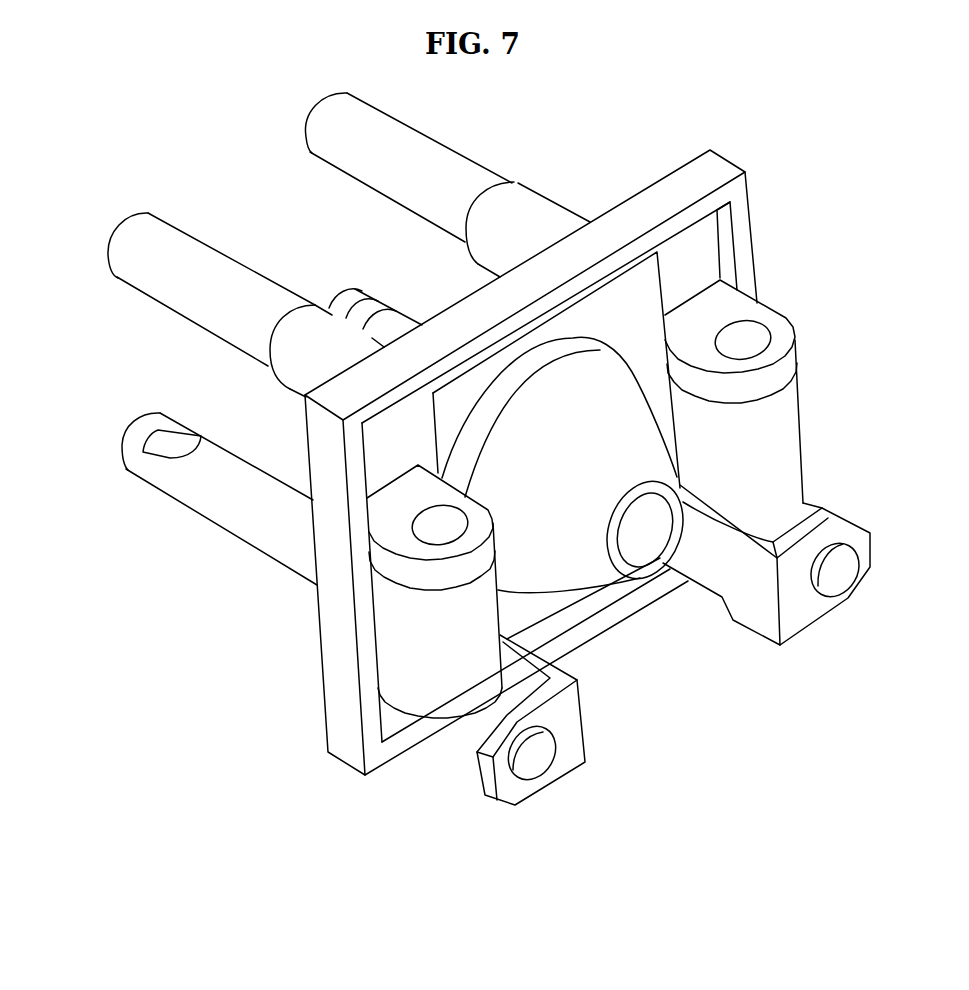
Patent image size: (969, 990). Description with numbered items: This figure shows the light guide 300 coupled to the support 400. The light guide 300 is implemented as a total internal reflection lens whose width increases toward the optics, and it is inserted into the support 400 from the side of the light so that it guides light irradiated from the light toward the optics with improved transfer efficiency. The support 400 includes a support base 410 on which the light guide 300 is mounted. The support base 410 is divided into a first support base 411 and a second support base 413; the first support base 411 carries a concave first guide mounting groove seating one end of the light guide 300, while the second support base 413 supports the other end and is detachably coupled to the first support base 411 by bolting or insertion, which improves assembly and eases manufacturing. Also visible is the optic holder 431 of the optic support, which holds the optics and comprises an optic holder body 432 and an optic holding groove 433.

The light guide 300 is at (605, 430).
The support 400 is at (411, 493).
The support base 410 is at (458, 462).
The first support base 411 is at (338, 667).
The second support base 413 is at (330, 513).
The optic holder 431 is at (327, 352).
The optic holder body 432 is at (197, 488).
The optic holding groove 433 is at (152, 446).